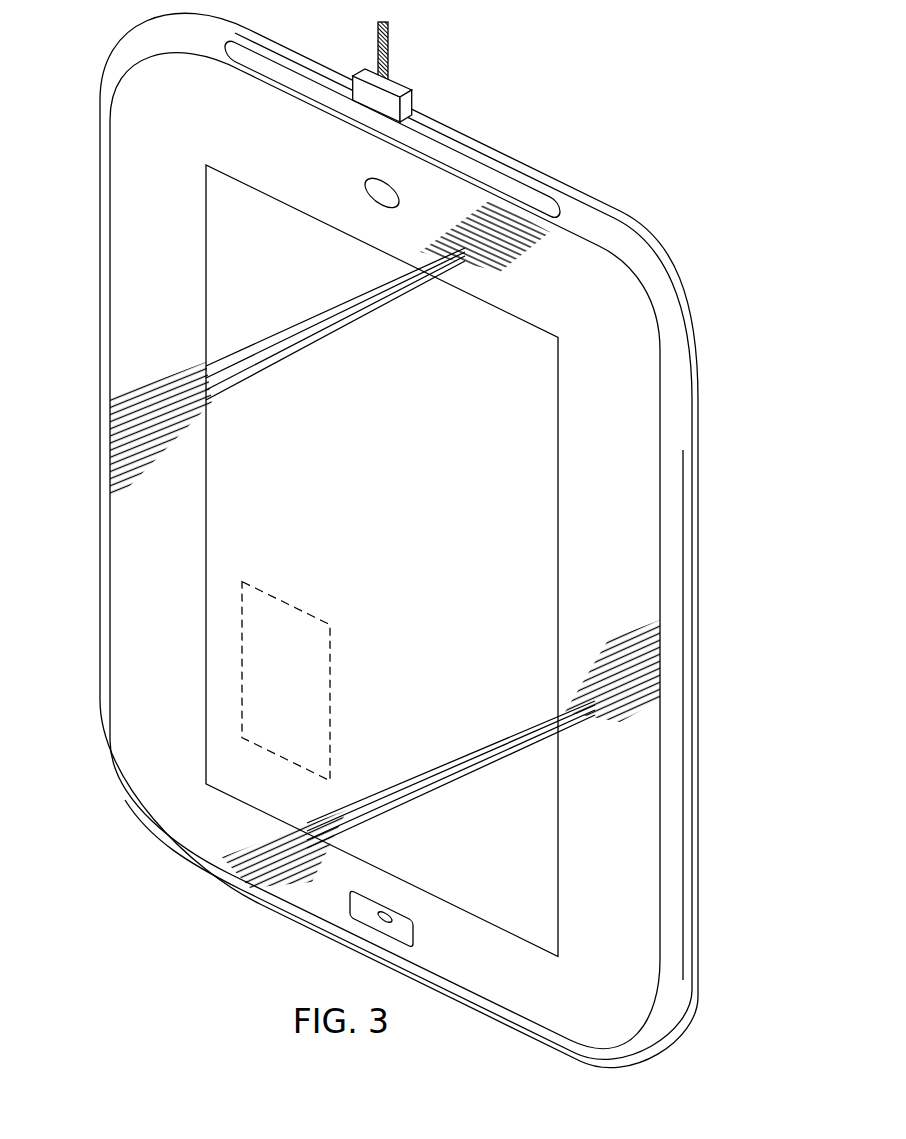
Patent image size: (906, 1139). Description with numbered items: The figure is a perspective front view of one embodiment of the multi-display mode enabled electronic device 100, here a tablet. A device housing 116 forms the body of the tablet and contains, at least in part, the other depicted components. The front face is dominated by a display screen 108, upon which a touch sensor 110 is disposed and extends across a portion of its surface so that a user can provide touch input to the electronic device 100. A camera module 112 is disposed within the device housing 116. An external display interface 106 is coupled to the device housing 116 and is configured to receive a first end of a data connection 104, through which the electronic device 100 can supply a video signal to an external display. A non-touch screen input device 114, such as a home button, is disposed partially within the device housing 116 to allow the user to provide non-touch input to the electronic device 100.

The multi-display mode enabled electronic device 100 is at (549, 115).
The data connection 104 is at (378, 60).
The external display interface 106 is at (398, 84).
The display screen 108 is at (336, 476).
The touch sensor 110 is at (250, 703).
The camera module 112 is at (382, 200).
The non-touch screen input device 114 is at (378, 913).
The device housing 116 is at (693, 812).